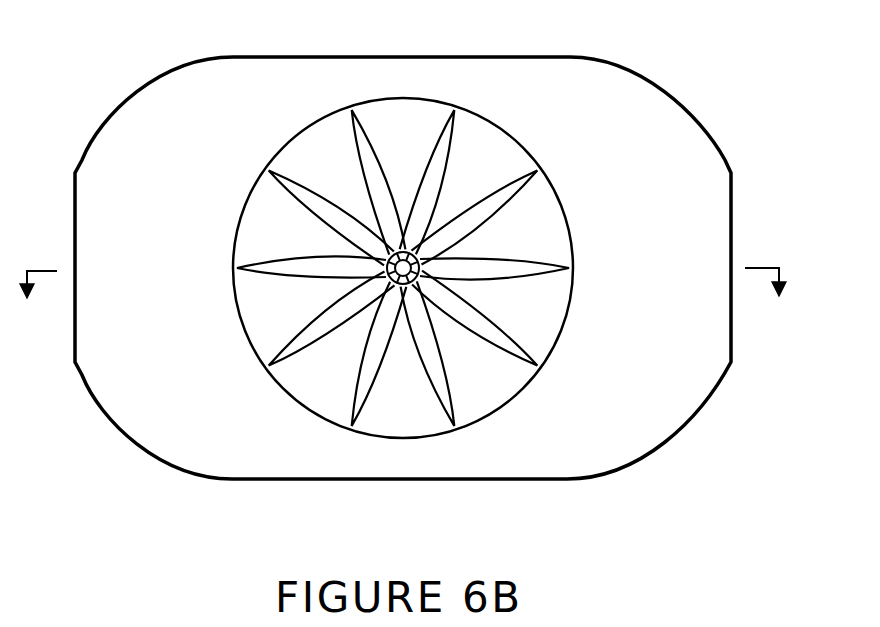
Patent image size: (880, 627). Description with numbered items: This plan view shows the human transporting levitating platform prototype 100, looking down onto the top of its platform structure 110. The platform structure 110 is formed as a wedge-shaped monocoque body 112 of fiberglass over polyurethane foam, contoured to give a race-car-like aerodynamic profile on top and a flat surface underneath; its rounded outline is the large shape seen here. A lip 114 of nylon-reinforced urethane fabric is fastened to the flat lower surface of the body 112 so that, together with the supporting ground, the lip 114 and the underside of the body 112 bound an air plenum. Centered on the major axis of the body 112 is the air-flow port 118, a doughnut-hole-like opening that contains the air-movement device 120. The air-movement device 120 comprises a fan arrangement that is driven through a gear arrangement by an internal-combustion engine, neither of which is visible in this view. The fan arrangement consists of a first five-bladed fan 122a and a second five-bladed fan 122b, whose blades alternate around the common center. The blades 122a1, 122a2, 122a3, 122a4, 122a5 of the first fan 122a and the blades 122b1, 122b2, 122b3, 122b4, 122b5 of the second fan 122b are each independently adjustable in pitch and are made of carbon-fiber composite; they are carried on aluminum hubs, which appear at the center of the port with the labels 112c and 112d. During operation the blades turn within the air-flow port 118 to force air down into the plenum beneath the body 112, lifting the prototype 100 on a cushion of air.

The human transporting levitating platform prototype 100 is at (688, 86).
The platform structure 110 is at (610, 472).
The wedge-shaped body 112 is at (645, 397).
The housing opening portion 112c is at (445, 257).
The housing opening portion 112d is at (382, 258).
The lip 114 is at (420, 480).
The air-flow port 118 is at (427, 410).
The air-movement device 120 is at (342, 287).
The first five-bladed fan 122a is at (445, 212).
The second five-bladed fan 122b is at (450, 285).
The fan blade 122a1 is at (508, 266).
The fan blade 122a2 is at (445, 138).
The fan blade 122a3 is at (327, 211).
The fan blade 122a4 is at (291, 347).
The fan blade 122a5 is at (438, 358).
The fan blade 122b1 is at (474, 218).
The fan blade 122b2 is at (372, 163).
The fan blade 122b3 is at (232, 270).
The fan blade 122b4 is at (371, 358).
The fan blade 122b5 is at (503, 330).